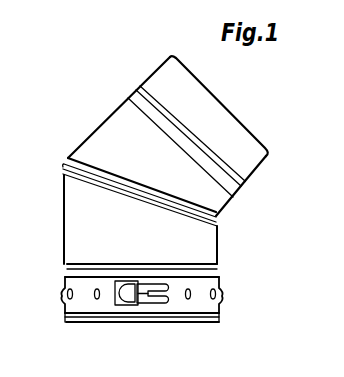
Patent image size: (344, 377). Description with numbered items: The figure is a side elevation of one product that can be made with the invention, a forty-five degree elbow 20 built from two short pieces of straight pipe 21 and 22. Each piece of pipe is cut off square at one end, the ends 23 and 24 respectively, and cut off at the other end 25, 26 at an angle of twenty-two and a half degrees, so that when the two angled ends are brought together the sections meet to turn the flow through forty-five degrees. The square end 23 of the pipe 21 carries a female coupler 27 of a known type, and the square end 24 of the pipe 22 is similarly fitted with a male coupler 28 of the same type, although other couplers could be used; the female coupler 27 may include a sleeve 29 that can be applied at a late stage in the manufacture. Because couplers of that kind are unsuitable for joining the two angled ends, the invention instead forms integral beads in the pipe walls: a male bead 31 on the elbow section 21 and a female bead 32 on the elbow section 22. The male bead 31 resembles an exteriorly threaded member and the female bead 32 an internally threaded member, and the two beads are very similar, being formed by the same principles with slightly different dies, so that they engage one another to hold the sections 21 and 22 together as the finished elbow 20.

The elbow 20 is at (82, 127).
The pipe 21 is at (135, 250).
The pipe 22 is at (141, 144).
The end 23 is at (143, 322).
The end 24 is at (226, 107).
The end 25 is at (134, 175).
The end 26 is at (127, 197).
The female coupler 27 is at (227, 277).
The male coupler 28 is at (258, 167).
The sleeve 29 is at (75, 306).
The male bead 31 is at (170, 213).
The female bead 32 is at (176, 193).